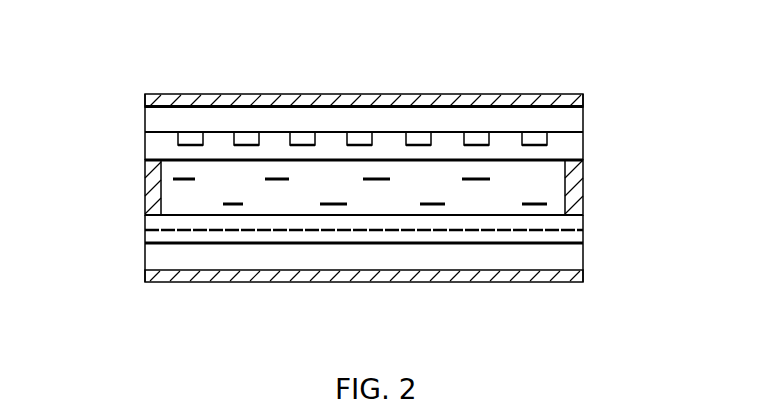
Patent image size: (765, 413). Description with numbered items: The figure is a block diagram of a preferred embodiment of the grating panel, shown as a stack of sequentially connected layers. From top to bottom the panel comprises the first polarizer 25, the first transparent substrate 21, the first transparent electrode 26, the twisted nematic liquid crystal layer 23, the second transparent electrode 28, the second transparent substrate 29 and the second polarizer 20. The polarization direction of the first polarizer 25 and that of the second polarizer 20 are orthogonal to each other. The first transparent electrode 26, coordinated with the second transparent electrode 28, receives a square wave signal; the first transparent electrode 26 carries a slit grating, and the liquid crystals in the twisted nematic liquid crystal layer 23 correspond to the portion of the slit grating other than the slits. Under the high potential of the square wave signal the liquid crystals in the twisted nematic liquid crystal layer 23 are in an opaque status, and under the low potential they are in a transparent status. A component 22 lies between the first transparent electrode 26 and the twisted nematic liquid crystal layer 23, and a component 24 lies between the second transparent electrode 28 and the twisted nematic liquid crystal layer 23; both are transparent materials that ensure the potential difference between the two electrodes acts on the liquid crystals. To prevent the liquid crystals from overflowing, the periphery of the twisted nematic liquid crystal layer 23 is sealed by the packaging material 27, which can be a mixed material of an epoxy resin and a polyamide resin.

The second polarizer 20 is at (523, 275).
The first transparent substrate 21 is at (147, 120).
The component 22 is at (152, 155).
The twisted nematic liquid crystal layer 23 is at (207, 190).
The component 24 is at (152, 223).
The first polarizer 25 is at (548, 100).
The first transparent electrode 26 is at (548, 140).
The packaging material 27 is at (573, 187).
The second transparent electrode 28 is at (573, 238).
The second transparent substrate 29 is at (580, 258).